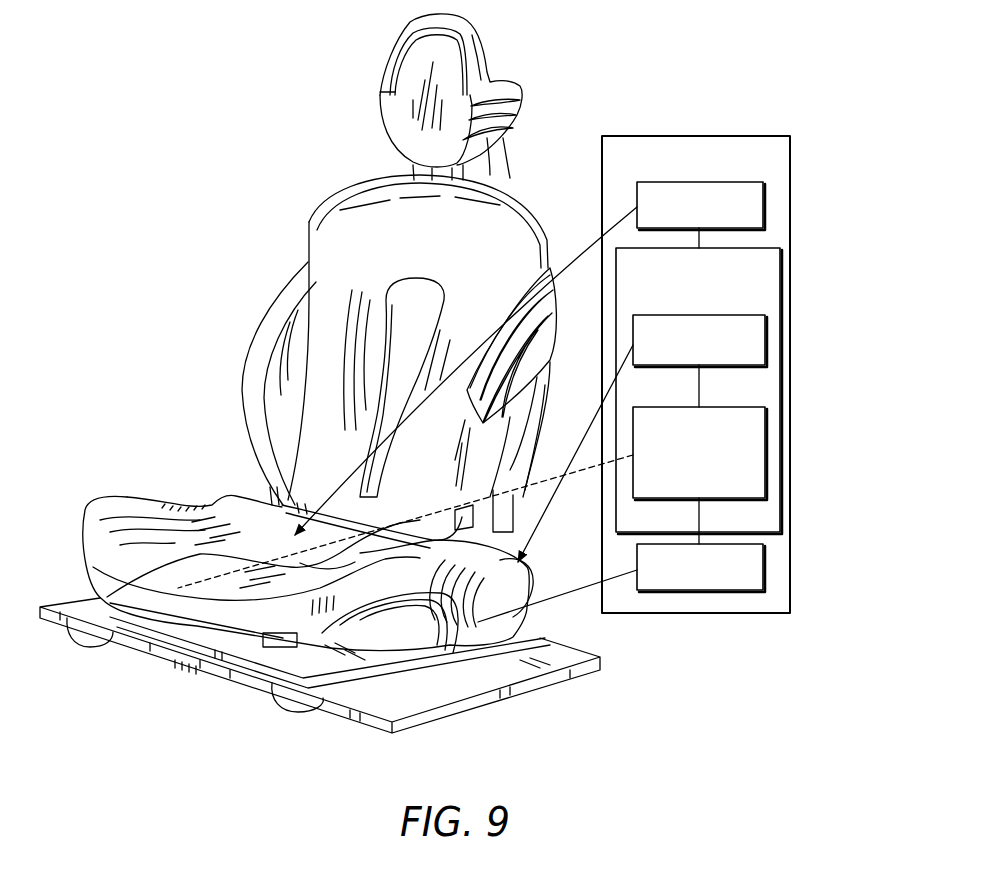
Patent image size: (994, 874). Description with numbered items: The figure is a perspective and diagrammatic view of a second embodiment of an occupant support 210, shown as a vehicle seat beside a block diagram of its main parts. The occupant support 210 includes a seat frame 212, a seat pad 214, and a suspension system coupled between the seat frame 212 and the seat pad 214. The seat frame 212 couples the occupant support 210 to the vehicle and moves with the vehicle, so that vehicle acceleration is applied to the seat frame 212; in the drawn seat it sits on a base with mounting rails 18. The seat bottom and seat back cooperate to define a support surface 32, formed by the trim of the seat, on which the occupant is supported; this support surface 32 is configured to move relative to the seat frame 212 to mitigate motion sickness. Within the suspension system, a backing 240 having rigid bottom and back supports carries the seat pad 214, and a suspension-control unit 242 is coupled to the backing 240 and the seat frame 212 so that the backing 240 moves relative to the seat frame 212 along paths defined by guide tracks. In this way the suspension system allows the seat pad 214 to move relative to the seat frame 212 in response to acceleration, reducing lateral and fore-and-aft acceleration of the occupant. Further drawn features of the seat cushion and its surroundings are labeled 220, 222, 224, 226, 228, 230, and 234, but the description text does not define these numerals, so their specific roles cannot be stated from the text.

The occupant support 210 is at (677, 88).
The mounting rails 18 is at (437, 728).
The support surface 32 is at (322, 447).
The seat frame 212 is at (285, 713).
The seat pad 214 is at (766, 205).
The seat bottom cushion 220 is at (175, 550).
The seat back cushion 222 is at (338, 288).
The stitching / seam 224 is at (218, 505).
The side trim / bracket 226 is at (518, 568).
The cushion contour line 228 is at (212, 552).
The seat pad surface 230 is at (342, 530).
The suspension system 234 is at (781, 283).
The backing 240 is at (766, 338).
The suspension-control unit 242 is at (766, 455).